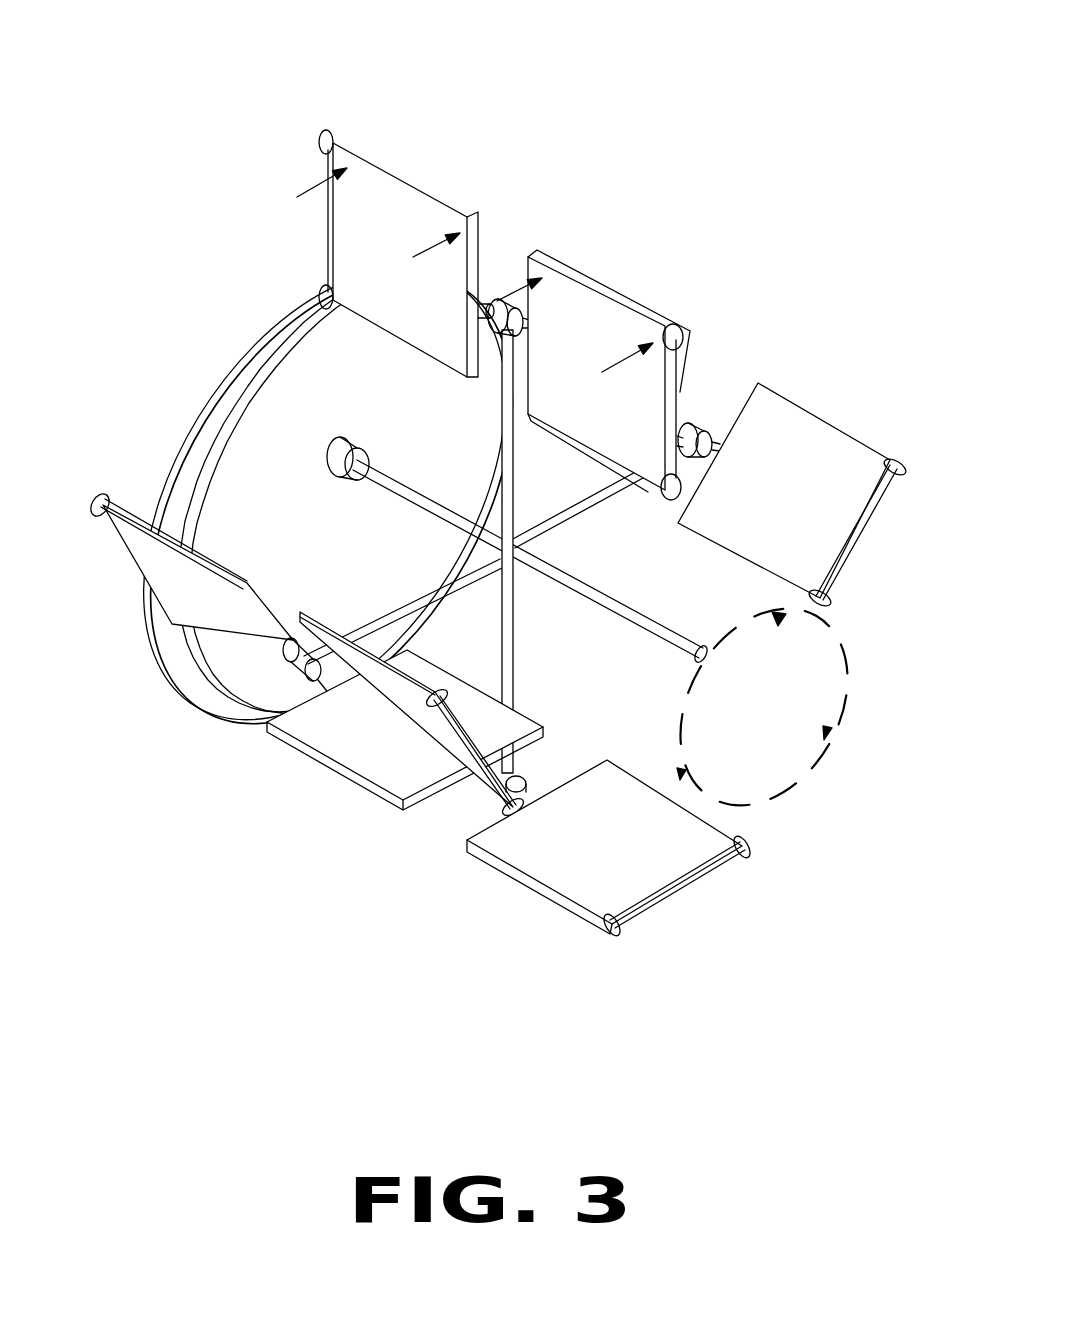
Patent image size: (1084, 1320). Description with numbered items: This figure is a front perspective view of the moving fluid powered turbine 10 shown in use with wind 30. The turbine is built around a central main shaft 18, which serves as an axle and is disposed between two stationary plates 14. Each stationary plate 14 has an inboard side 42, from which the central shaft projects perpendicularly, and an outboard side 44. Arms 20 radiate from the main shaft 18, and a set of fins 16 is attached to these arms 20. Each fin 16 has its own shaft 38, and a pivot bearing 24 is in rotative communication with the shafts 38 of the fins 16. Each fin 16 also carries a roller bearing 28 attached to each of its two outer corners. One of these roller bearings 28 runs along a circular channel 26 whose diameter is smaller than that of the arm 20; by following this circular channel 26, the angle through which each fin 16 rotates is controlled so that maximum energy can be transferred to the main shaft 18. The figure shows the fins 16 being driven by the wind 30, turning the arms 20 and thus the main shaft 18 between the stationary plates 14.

The moving fluid powered turbine 10 is at (489, 512).
The stationary plate 14 is at (197, 427).
The fin 16 is at (553, 893).
The main shaft 18 is at (720, 590).
The arm 20 is at (513, 678).
The pivot bearing 24 is at (307, 663).
The circular channel 26 is at (307, 322).
The roller bearing 28 is at (98, 493).
The wind 30 is at (413, 257).
The shaft 38 is at (293, 645).
The inboard side 42 is at (223, 508).
The outboard side 44 is at (227, 370).